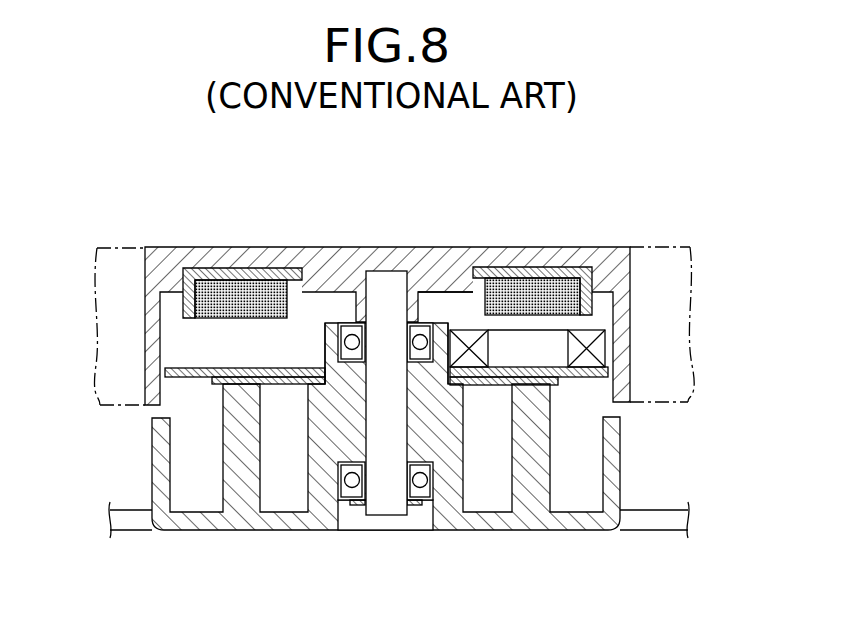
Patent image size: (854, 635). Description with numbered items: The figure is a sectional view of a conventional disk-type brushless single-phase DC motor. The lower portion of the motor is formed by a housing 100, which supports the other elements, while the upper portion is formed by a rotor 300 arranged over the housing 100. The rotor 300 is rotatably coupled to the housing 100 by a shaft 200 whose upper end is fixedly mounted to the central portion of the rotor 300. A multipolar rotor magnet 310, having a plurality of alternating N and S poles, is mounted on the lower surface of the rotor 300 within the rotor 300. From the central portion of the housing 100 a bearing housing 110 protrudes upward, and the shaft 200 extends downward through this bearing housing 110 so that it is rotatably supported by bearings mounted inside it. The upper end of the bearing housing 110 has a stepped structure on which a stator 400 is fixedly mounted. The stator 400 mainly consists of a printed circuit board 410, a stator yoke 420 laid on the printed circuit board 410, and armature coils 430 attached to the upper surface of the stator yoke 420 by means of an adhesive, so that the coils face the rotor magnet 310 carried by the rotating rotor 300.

The housing 100 is at (447, 505).
The bearing housing 110 is at (320, 440).
The shaft 200 is at (388, 292).
The rotor 300 is at (320, 266).
The multipolar rotor magnet 310 is at (222, 283).
The stator 400 is at (508, 341).
The printed circuit board 410 is at (483, 387).
The stator yoke 420 is at (547, 358).
The armature coils 430 is at (470, 342).